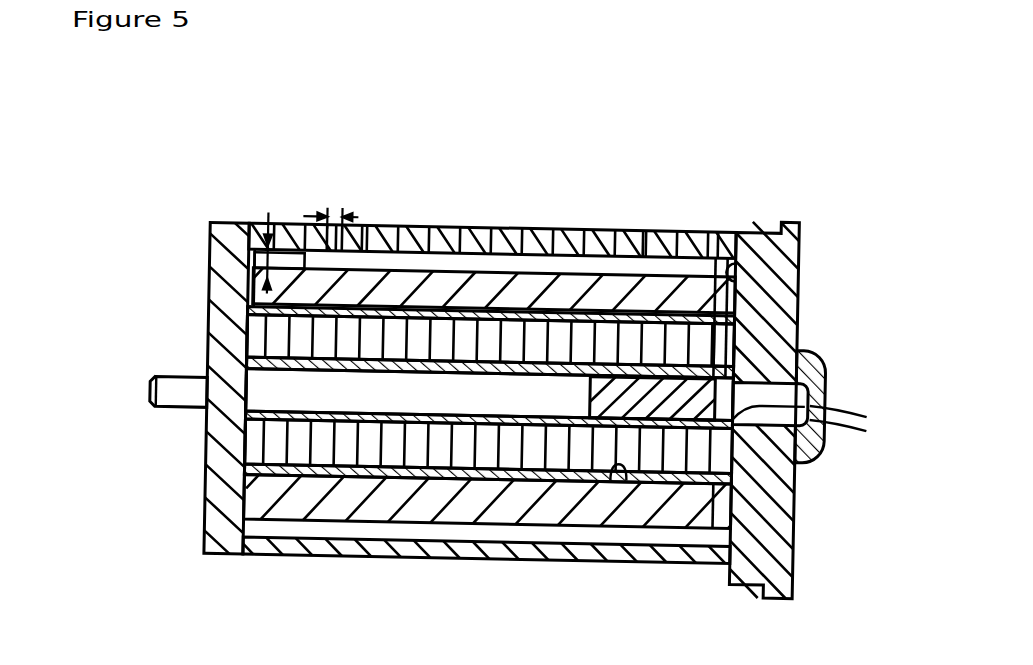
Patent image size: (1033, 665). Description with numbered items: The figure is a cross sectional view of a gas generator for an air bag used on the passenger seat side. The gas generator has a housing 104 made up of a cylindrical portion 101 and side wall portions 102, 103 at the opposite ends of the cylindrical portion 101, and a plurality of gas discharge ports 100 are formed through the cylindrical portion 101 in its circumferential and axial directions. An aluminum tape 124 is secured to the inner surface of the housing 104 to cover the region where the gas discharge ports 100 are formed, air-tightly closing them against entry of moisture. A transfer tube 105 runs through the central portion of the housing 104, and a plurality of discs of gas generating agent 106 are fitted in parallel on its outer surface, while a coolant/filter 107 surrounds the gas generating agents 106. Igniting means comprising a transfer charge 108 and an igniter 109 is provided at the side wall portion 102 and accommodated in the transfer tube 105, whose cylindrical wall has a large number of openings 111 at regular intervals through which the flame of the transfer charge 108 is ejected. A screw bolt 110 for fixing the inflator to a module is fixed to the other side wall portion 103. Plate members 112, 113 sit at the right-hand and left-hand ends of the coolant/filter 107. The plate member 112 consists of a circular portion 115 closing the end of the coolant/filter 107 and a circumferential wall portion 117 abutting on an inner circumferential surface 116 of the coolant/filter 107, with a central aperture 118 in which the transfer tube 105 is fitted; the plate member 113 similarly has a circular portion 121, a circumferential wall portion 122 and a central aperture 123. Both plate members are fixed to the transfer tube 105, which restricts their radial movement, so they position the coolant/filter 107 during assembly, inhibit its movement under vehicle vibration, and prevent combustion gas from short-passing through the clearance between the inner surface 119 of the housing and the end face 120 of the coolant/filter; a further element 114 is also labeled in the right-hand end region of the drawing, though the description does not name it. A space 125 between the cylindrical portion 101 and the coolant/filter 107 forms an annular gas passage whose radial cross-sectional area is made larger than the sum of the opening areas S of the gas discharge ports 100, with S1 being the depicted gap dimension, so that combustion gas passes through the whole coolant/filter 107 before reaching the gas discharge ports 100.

The gas discharge ports 100 is at (411, 229).
The cylindrical portion 101 is at (639, 230).
The side wall portion 102 is at (796, 213).
The side wall portion 103 is at (208, 287).
The housing 104 is at (678, 232).
The transfer tube 105 is at (388, 424).
The gas generating agent 106 is at (484, 458).
The coolant/filter 107 is at (697, 543).
The transfer charge 108 is at (563, 416).
The igniter 109 is at (816, 368).
The screw bolt 110 is at (171, 379).
The openings 111 is at (572, 361).
The plate member 112 is at (710, 304).
The plate member 113 is at (299, 300).
The bearing 114 is at (739, 336).
The circular portion 115 is at (795, 465).
The inner circumferential surface 116 is at (612, 478).
The circumferential wall portion 117 is at (695, 521).
The central aperture 118 is at (821, 418).
The inner surface of the housing 119 is at (726, 304).
The end face of the coolant/filter 120 is at (796, 275).
The circular portion 121 is at (219, 332).
The circumferential wall portion 122 is at (276, 488).
The central aperture 123 is at (258, 409).
The aluminum tape 124 is at (359, 231).
The space 125 is at (498, 263).
The opening area S is at (329, 231).
The gap S1 is at (220, 234).